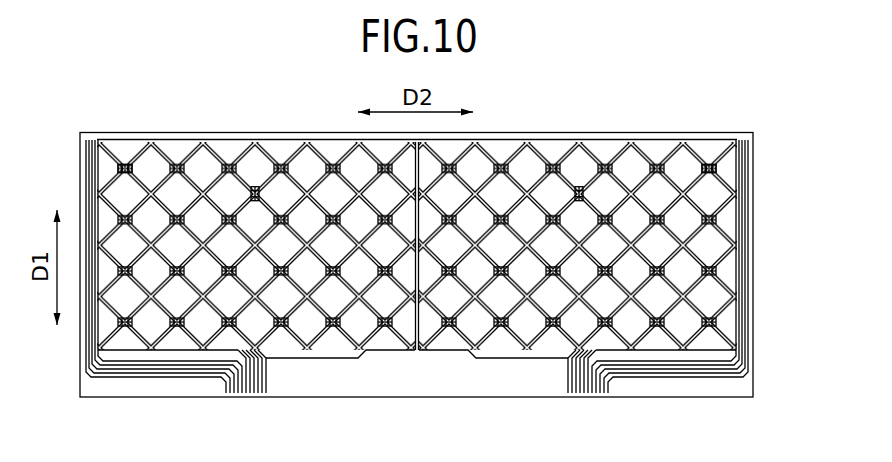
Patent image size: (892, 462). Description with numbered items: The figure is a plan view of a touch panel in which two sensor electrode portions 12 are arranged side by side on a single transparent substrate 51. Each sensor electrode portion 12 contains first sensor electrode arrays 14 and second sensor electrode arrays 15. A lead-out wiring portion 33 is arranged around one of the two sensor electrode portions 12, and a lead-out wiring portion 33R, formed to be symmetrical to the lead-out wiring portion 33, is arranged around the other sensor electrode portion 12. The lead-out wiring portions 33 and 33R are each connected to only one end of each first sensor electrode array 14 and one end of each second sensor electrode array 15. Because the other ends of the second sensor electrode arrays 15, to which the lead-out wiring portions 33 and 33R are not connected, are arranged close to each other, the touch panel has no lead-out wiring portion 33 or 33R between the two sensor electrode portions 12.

The transparent substrate 51 is at (99, 132).
The sensor electrode portion 12 is at (227, 138).
The second sensor electrode array 15 is at (107, 166).
The first sensor electrode array 14 is at (392, 353).
The lead-out wiring portion 33 is at (113, 381).
The lead-out wiring portion 33R is at (725, 381).